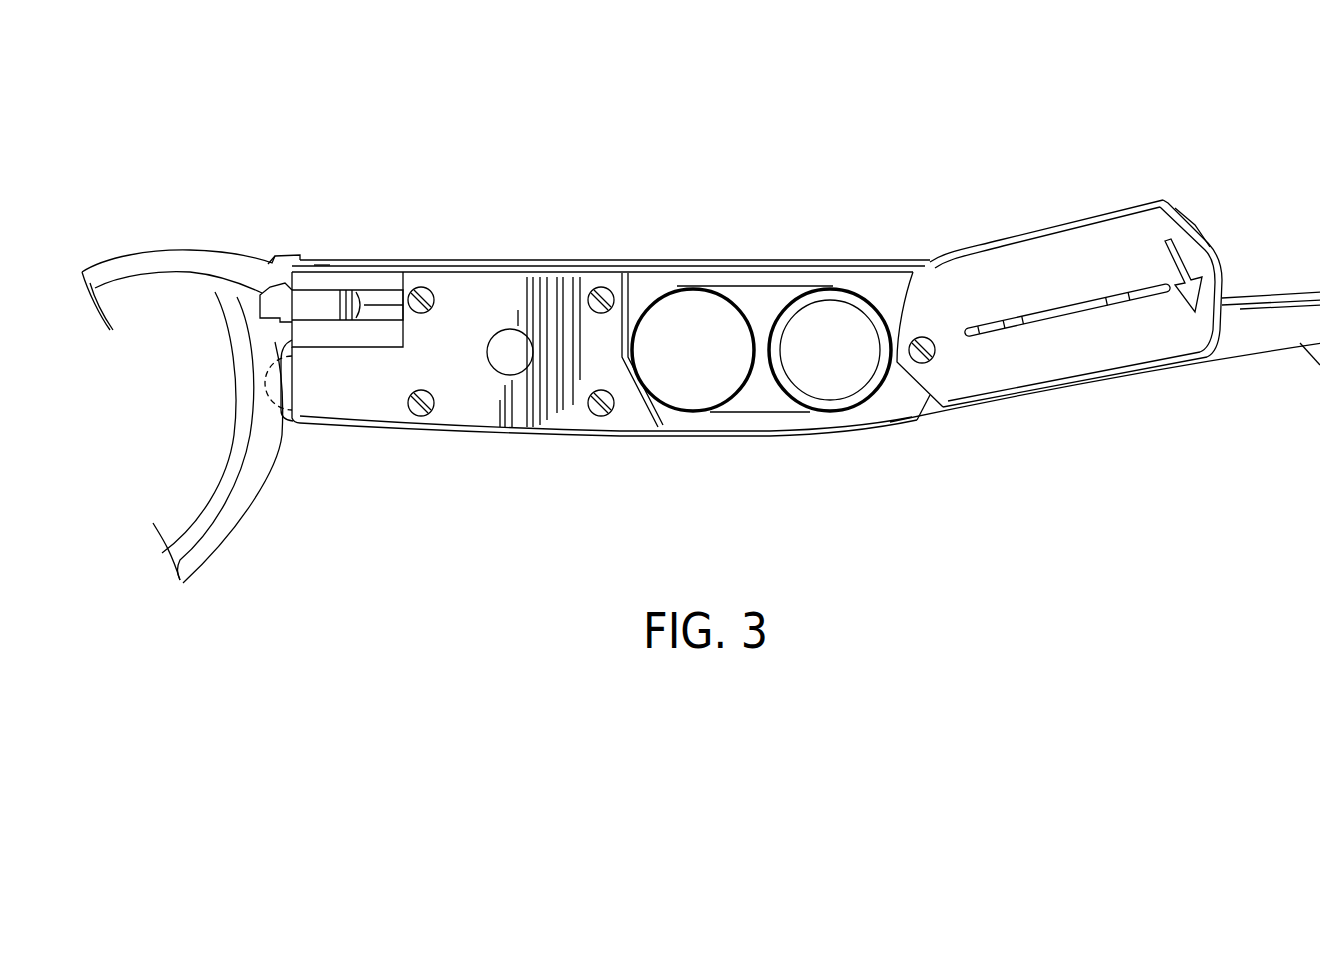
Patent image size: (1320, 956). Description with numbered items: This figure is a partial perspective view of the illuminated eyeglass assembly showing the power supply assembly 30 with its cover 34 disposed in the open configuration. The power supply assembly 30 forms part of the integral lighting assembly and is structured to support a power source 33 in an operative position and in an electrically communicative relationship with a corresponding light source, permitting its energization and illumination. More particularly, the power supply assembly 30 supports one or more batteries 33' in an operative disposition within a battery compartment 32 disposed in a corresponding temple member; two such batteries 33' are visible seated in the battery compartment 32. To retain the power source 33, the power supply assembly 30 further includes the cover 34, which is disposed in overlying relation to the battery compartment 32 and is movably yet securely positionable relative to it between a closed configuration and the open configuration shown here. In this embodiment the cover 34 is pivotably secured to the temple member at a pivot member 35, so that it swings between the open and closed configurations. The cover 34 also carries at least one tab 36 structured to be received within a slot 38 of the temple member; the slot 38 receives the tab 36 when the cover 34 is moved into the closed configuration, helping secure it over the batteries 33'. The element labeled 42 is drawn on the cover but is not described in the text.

The power supply assembly 30 is at (792, 453).
The battery compartment 32 is at (765, 298).
The power source 33 is at (708, 256).
The batteries 33' is at (761, 256).
The cover 34 is at (1090, 372).
The pivot member 35 is at (932, 338).
The tab 36 is at (1240, 357).
The slot 38 is at (623, 270).
The latch 42 is at (1207, 245).